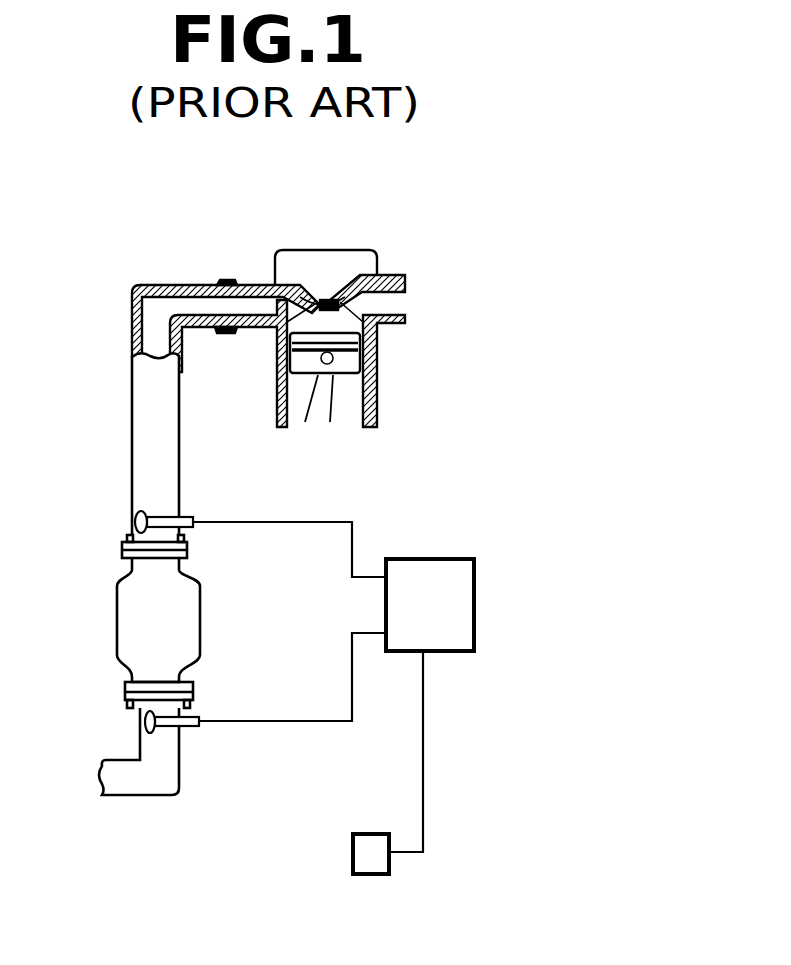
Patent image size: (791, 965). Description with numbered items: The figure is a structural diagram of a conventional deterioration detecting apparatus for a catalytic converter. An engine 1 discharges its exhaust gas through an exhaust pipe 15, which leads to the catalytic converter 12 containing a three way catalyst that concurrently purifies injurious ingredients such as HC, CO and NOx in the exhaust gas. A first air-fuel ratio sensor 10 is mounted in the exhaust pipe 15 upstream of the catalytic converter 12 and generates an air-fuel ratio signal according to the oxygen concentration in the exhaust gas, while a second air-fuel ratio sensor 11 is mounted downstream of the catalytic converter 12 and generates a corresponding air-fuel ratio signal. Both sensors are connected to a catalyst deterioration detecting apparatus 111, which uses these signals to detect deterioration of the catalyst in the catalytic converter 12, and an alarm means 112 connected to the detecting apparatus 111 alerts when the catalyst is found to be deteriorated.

The engine 1 is at (320, 250).
The first air-fuel ratio sensor 10 is at (183, 512).
The second air-fuel ratio sensor 11 is at (190, 731).
The catalytic converter 12 is at (125, 620).
The exhaust pipe 15 is at (138, 420).
The catalyst deterioration detecting apparatus 111 is at (447, 558).
The alarm means 112 is at (368, 877).